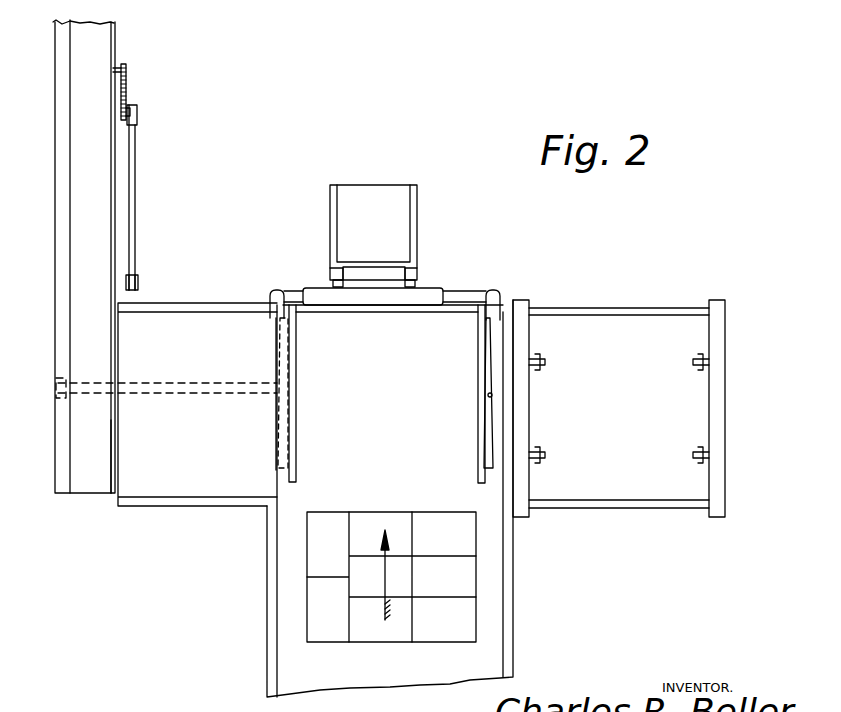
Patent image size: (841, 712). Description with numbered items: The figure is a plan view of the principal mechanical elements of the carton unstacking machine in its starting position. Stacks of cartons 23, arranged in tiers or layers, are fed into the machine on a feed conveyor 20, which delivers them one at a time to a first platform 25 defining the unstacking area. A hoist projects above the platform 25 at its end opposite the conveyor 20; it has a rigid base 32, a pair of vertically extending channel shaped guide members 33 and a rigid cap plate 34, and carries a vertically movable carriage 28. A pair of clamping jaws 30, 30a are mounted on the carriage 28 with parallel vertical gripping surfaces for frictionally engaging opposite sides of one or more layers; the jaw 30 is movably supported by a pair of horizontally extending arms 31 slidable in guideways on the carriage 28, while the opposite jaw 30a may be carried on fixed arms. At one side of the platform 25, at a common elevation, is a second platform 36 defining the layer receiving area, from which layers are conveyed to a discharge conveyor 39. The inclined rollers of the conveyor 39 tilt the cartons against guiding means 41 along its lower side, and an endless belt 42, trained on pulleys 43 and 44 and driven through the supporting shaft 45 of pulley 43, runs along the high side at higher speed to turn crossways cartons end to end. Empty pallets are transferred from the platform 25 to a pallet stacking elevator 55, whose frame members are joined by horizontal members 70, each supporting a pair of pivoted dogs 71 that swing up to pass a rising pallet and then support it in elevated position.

The feed conveyor 20 is at (287, 606).
The cartons 23 is at (332, 523).
The first platform 25 is at (418, 421).
The vertically movable carriage 28 is at (440, 293).
The clamping jaw 30 is at (480, 355).
The clamping jaw 30a is at (293, 357).
The horizontally extending arms 31 is at (279, 292).
The rigid base 32 is at (417, 204).
The channel shaped guide members 33 is at (320, 270).
The rigid cap plate 34 is at (366, 273).
The second platform 36 is at (197, 330).
The discharge conveyor 39 is at (98, 487).
The guiding means 41 is at (58, 338).
The endless belt 42 is at (135, 172).
The pulley 43 is at (137, 125).
The pulley 44 is at (138, 272).
The supporting shaft 45 is at (131, 113).
The pallet stacking elevator 55 is at (632, 415).
The horizontal members 70 is at (521, 302).
The pivoted dogs 71 is at (543, 365).